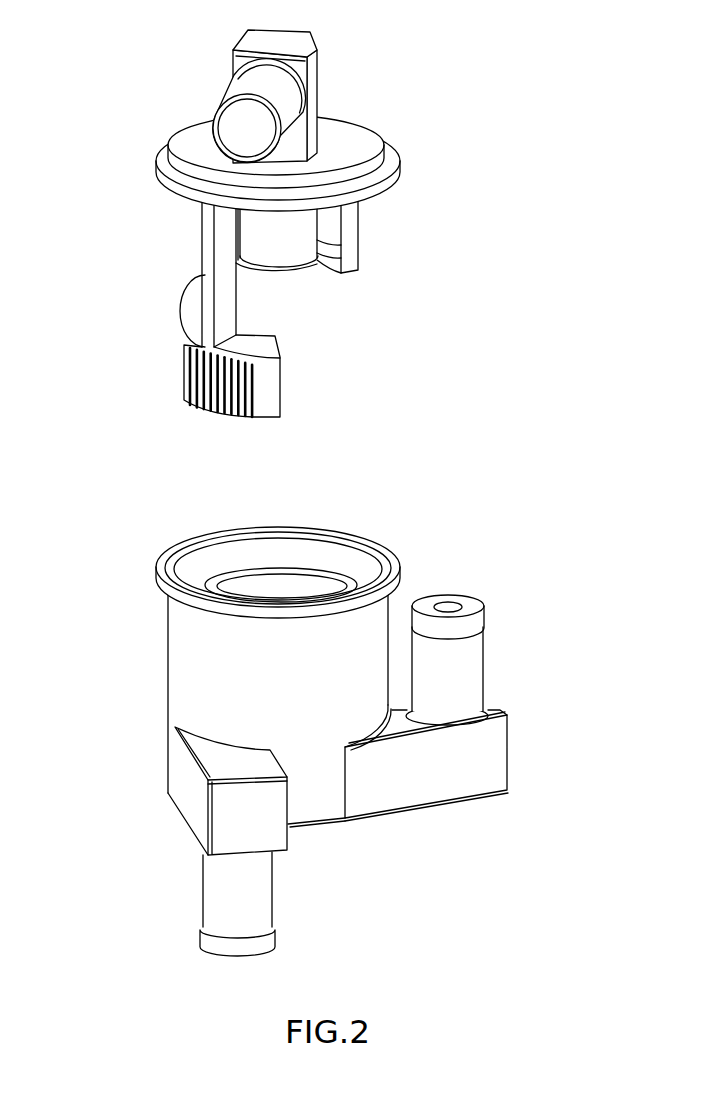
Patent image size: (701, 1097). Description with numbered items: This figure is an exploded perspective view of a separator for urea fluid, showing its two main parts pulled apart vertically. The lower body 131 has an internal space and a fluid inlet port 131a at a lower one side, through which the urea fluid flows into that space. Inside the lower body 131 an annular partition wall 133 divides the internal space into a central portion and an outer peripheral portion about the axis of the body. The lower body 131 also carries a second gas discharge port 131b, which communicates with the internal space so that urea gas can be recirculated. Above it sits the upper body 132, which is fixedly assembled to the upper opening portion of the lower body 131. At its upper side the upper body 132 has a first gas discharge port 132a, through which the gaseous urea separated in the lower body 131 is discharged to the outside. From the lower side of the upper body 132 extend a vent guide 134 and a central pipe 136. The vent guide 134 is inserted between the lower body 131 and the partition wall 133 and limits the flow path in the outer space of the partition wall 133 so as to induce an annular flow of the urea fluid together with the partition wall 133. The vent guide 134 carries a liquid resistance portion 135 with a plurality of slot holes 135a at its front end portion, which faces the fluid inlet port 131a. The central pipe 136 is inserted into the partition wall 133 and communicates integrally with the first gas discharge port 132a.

The lower body 131 is at (320, 751).
The fluid inlet port 131a is at (208, 948).
The second gas discharge port 131b is at (470, 679).
The upper body 132 is at (209, 274).
The first gas discharge port 132a is at (237, 126).
The annular partition wall 133 is at (318, 575).
The vent guide 134 is at (180, 312).
The liquid resistance portion 135 is at (173, 426).
The slot holes 135a is at (207, 392).
The central pipe 136 is at (292, 258).